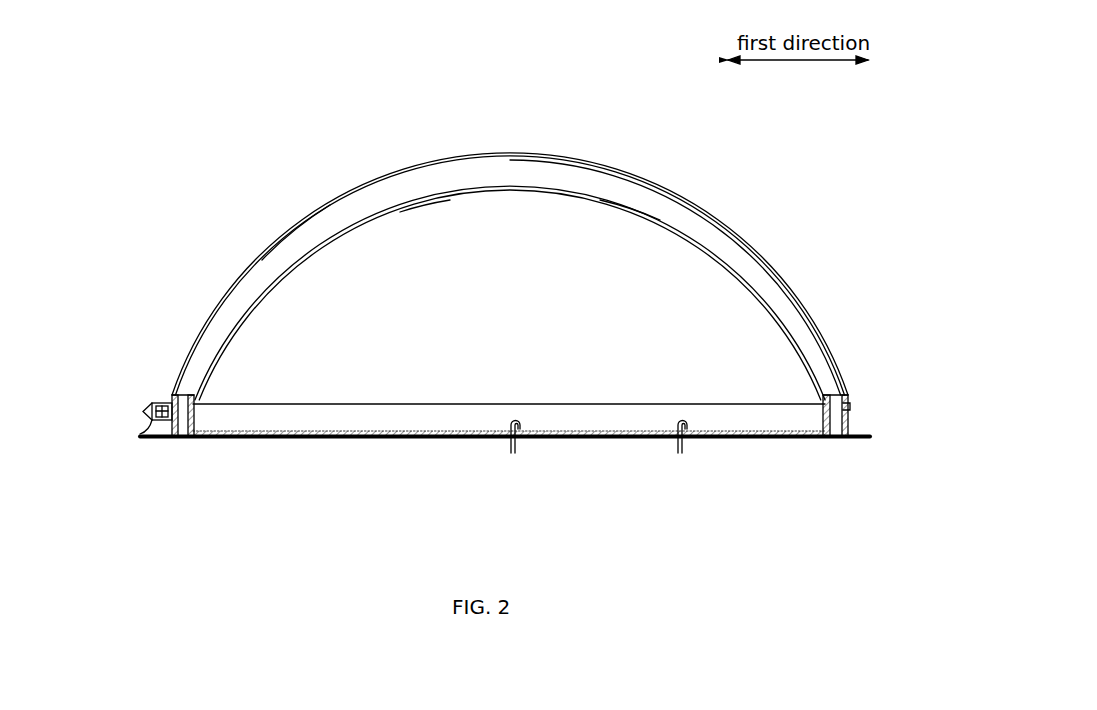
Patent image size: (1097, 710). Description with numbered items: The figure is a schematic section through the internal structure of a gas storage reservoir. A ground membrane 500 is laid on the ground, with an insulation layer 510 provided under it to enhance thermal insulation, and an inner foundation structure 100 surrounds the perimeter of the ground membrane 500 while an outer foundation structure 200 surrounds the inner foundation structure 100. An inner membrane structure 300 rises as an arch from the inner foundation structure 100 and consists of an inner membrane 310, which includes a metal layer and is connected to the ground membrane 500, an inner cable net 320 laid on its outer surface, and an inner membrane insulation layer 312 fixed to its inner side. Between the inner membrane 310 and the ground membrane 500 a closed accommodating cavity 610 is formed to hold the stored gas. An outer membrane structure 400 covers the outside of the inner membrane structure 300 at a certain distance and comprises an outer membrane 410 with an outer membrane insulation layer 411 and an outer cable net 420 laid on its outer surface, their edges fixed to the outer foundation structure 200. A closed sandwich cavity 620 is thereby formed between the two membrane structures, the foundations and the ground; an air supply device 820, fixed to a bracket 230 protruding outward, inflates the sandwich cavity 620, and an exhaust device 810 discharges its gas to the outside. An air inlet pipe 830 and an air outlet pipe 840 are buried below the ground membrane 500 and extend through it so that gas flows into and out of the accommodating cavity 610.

The inner foundation structure 100 is at (190, 442).
The outer foundation structure 200 is at (165, 442).
The bracket 230 is at (148, 430).
The inner membrane structure 300 is at (510, 245).
The inner membrane 310 is at (578, 200).
The inner membrane insulation layer 312 is at (628, 212).
The inner cable net 320 is at (508, 188).
The outer membrane structure 400 is at (533, 272).
The outer membrane 410 is at (762, 254).
The outer membrane insulation layer 411 is at (790, 288).
The outer cable net 420 is at (733, 230).
The ground membrane 500 is at (458, 403).
The insulation layer 510 is at (342, 438).
The accommodating cavity 610 is at (425, 215).
The sandwich cavity 620 is at (300, 246).
The exhaust device 810 is at (851, 406).
The air supply device 820 is at (160, 403).
The air inlet pipe 830 is at (516, 446).
The air outlet pipe 840 is at (683, 446).